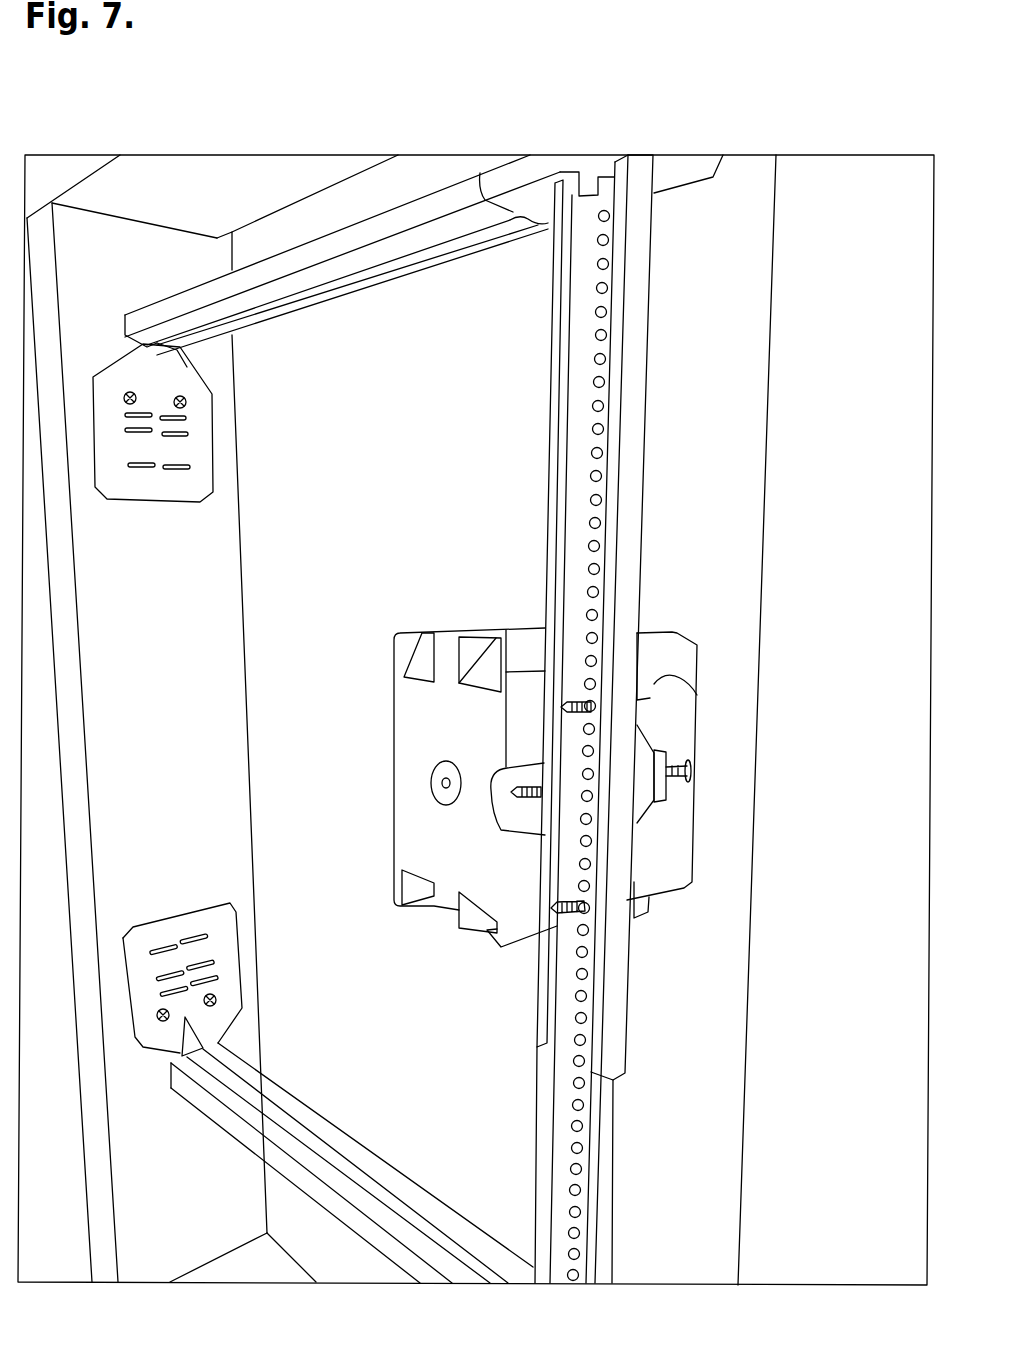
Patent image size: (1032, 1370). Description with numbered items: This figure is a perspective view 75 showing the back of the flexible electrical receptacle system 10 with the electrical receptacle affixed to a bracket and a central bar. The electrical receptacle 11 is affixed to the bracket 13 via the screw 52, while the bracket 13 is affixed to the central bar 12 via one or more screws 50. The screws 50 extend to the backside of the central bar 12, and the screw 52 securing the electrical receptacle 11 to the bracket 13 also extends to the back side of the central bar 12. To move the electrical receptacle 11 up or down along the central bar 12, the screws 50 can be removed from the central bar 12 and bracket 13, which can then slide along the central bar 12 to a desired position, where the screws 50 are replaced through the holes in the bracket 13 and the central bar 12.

The perspective view 75 is at (130, 71).
The flexible electrical receptacle system 10 is at (541, 105).
The electrical receptacle 11 is at (394, 783).
The central bar 12 is at (646, 441).
The bracket 13 is at (697, 683).
The screws 50 is at (554, 912).
The screw 52 is at (692, 770).